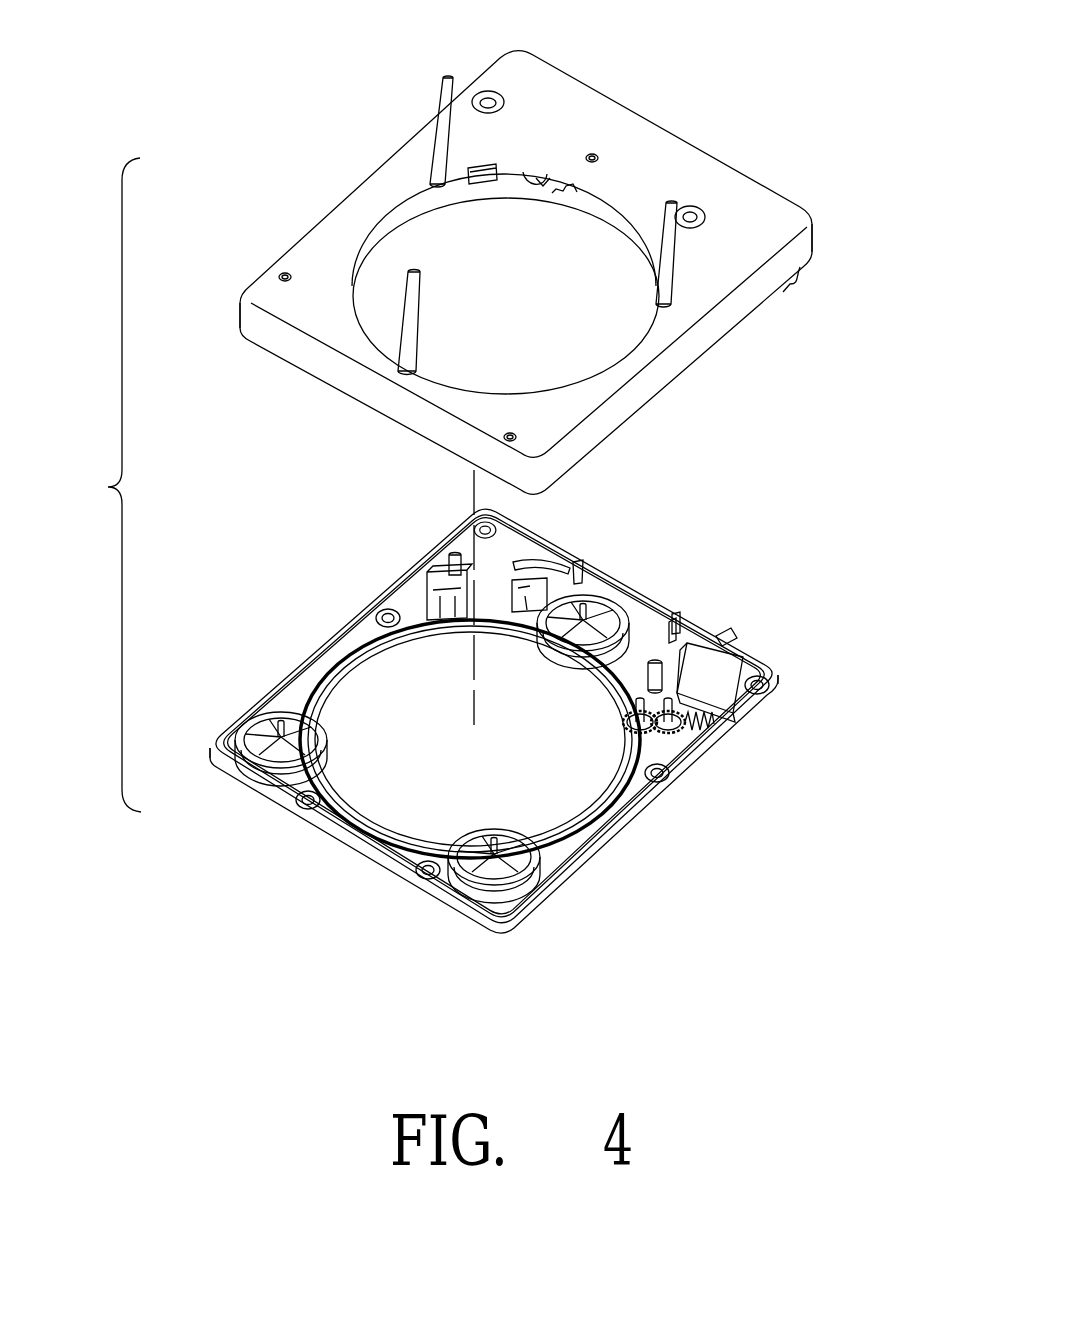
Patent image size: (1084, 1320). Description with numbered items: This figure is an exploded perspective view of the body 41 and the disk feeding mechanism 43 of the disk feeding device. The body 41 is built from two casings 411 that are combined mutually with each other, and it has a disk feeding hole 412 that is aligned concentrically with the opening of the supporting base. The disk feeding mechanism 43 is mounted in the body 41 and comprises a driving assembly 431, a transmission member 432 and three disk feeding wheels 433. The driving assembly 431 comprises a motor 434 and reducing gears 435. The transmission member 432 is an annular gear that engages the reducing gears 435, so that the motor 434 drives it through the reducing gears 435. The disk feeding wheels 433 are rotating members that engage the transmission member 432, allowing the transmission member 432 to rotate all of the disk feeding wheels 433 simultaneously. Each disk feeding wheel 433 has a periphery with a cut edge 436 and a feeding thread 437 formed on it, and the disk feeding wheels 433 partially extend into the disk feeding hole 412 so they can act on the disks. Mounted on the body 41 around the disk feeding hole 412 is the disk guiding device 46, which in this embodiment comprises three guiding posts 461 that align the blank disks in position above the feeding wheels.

The body 41 is at (98, 485).
The casing 411 is at (733, 307).
The disk feeding hole 412 is at (547, 172).
The disk feeding mechanism 43 is at (544, 744).
The driving assembly 431 is at (730, 626).
The transmission member 432 is at (633, 757).
The disk feeding wheel 433 is at (323, 800).
The motor 434 is at (722, 657).
The reducing gears 435 is at (627, 727).
The cut edge 436 is at (677, 623).
The feeding thread 437 is at (513, 920).
The disk guiding device 46 is at (484, 249).
The guiding post 461 is at (406, 322).